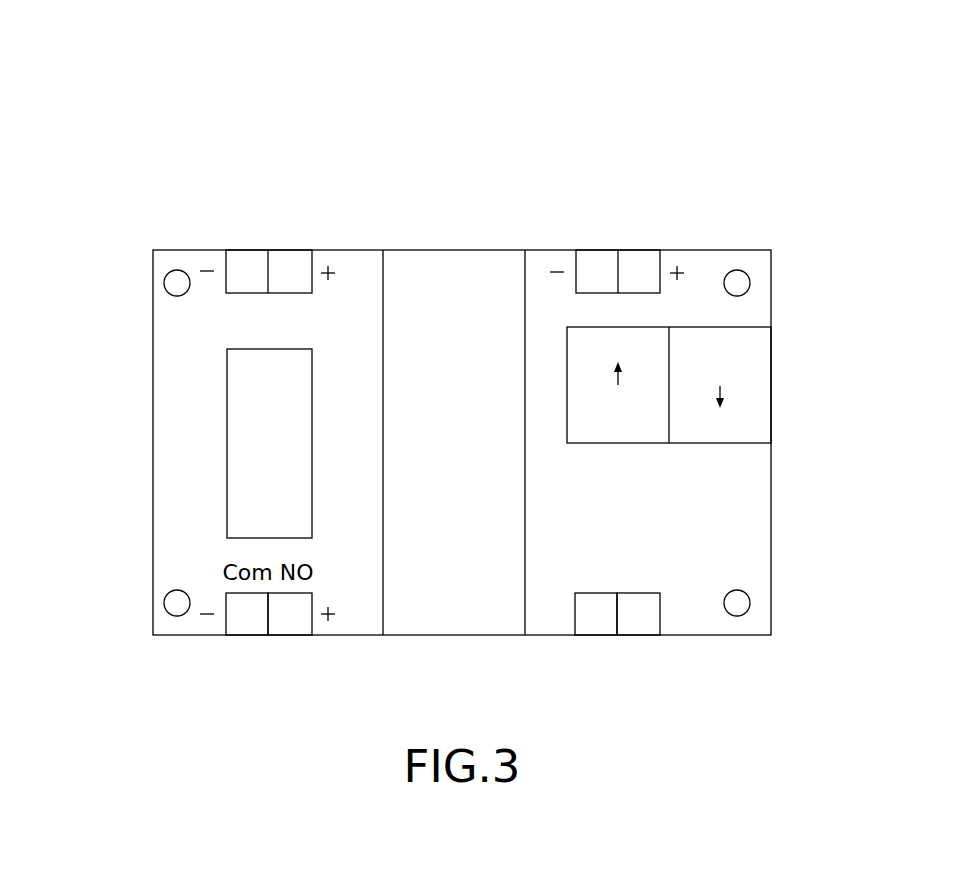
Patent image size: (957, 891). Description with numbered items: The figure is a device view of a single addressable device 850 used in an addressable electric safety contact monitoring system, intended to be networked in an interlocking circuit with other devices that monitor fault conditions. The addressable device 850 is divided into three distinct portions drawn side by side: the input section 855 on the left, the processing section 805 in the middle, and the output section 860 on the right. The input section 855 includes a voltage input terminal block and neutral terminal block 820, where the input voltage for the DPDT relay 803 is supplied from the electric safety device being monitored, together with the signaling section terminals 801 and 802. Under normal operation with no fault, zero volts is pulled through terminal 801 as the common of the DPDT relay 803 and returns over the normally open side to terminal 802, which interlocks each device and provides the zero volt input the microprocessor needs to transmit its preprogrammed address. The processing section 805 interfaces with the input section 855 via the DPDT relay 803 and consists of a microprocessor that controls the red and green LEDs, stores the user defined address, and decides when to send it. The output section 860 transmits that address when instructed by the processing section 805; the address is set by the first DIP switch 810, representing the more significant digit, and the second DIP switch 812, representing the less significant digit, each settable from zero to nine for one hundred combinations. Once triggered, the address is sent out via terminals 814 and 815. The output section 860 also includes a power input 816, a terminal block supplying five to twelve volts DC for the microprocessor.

The addressable device 850 is at (218, 85).
The input section 855 is at (130, 601).
The output section 860 is at (790, 434).
The voltage input terminal block and neutral terminal block 820 is at (239, 260).
The power input 816 is at (643, 268).
The first DIP switch 810 is at (638, 344).
The second DIP switch 812 is at (757, 352).
The processing section 805 is at (452, 286).
The DPDT relay 803 is at (225, 443).
The signaling section terminal 801 is at (248, 620).
The signaling section terminal 802 is at (290, 623).
The terminal 814 is at (592, 620).
The terminal 815 is at (643, 623).